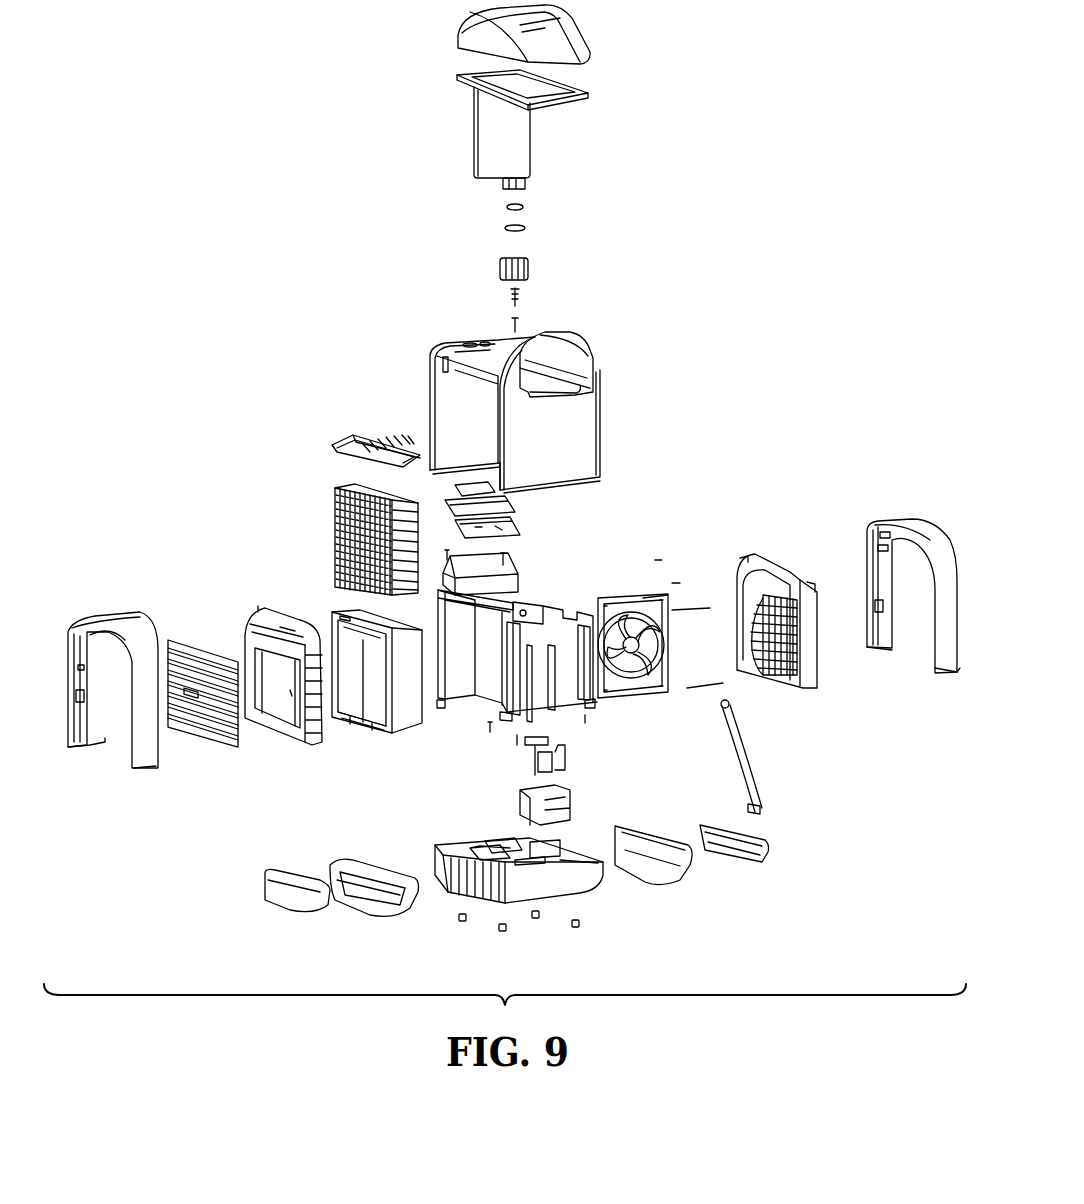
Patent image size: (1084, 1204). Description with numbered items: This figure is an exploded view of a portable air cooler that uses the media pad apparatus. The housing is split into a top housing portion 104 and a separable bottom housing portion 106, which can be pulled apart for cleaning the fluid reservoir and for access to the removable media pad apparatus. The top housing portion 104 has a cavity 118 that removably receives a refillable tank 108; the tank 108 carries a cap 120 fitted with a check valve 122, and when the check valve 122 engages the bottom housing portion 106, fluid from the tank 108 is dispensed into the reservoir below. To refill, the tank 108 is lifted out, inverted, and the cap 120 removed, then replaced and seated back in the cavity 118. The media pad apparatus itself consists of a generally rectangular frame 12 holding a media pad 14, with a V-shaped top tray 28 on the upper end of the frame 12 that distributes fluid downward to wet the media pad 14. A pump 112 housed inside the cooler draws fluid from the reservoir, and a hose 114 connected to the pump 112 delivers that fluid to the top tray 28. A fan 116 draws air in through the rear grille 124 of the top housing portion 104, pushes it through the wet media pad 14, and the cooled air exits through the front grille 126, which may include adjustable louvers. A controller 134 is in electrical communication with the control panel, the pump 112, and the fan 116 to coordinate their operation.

The tank 108 is at (587, 88).
The cap 120 is at (530, 267).
The check valve 122 is at (523, 297).
The top housing portion 104 is at (430, 367).
The cavity 118 is at (563, 362).
The top tray 28 is at (350, 437).
The media pad 14 is at (340, 488).
The frame 12 is at (350, 613).
The front grille 126 is at (202, 650).
The controller 134 is at (503, 535).
The fan 116 is at (668, 608).
The rear grille 124 is at (750, 557).
The pump 112 is at (565, 768).
The hose 114 is at (755, 765).
The bottom housing portion 106 is at (595, 888).